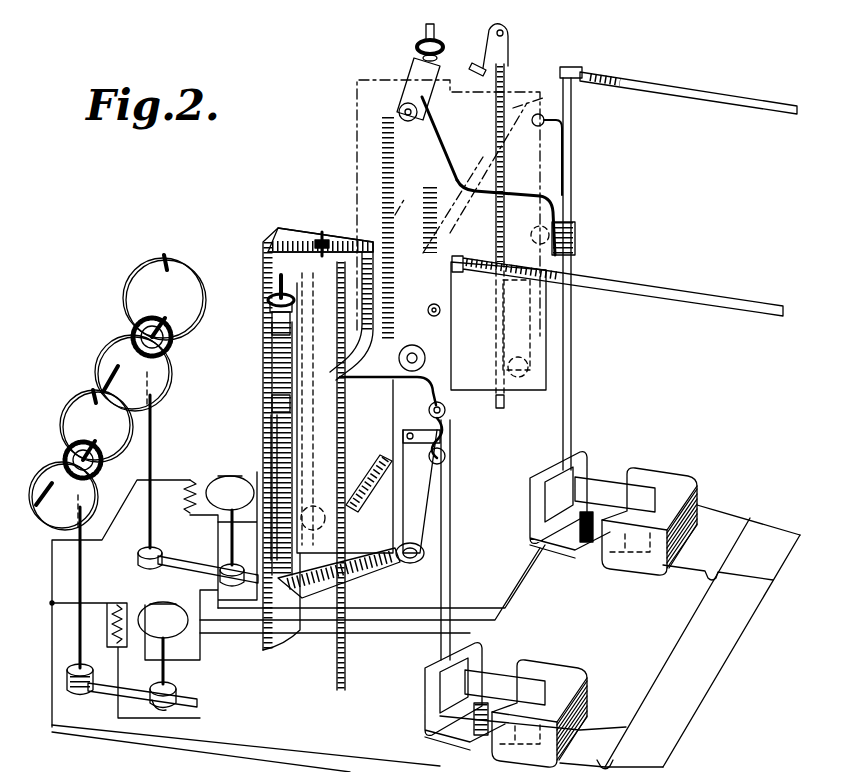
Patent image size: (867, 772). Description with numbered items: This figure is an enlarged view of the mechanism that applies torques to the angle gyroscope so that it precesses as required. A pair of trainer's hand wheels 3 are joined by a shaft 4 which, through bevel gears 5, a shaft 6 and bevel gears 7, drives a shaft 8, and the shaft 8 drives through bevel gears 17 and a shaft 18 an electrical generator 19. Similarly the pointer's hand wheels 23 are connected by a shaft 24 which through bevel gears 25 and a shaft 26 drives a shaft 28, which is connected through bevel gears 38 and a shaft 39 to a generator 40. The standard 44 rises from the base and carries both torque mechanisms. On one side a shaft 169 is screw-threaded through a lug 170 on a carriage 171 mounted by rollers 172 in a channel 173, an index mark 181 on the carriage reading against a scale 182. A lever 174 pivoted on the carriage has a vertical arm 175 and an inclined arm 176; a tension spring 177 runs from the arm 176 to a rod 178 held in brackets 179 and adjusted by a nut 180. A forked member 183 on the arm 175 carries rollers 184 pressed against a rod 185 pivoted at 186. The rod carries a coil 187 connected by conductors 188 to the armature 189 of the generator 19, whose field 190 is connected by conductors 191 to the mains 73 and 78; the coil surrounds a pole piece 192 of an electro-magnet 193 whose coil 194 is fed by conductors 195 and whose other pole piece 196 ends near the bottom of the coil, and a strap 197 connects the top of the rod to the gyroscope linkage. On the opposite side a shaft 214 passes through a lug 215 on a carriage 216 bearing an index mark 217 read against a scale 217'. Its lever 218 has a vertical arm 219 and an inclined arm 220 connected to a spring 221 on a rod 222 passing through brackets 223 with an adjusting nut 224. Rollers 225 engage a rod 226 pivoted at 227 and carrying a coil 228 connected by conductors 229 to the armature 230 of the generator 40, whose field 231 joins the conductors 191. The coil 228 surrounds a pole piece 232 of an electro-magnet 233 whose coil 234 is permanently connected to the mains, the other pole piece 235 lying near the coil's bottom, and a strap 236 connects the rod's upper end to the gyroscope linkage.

The trainer's hand wheels 3 is at (80, 412).
The shaft 4 is at (68, 453).
The bevel gears 5 is at (96, 462).
The shaft 6 is at (84, 568).
The bevel gears 7 is at (74, 694).
The shaft 8 is at (198, 702).
The bevel gears 17 is at (170, 706).
The shaft 18 is at (158, 682).
The electrical generator 19 is at (162, 603).
The hand wheels 23 is at (152, 280).
The shaft 24 is at (132, 333).
The bevel gears 25 is at (168, 340).
The shaft 26 is at (155, 415).
The shaft 28 is at (192, 562).
The bevel gears 38 is at (235, 584).
The shaft 39 is at (236, 536).
The generator 40 is at (231, 471).
The standard 44 is at (262, 238).
The main 73 is at (684, 633).
The main 78 is at (745, 632).
The shaft 169 is at (334, 386).
The lug 170 is at (352, 455).
The carriage 171 is at (440, 487).
The rollers 172 is at (290, 240).
The channel 173 is at (322, 232).
The lever 174 is at (425, 547).
The vertical arm 175 is at (452, 506).
The inclined arm 176 is at (380, 575).
The tension spring 177 is at (291, 488).
The rod 178 is at (275, 283).
The brackets 179 is at (272, 325).
The nut 180 is at (268, 300).
The index mark 181 is at (319, 409).
The scale 182 is at (270, 440).
The forked member 183 is at (428, 412).
The rollers 184 is at (432, 402).
The rod 185 is at (447, 433).
The pivot 186 is at (453, 305).
The coil 187 is at (483, 655).
The conductors 188 is at (412, 622).
The armature 189 is at (163, 620).
The field 190 is at (120, 602).
The conductors 191 is at (285, 765).
The pole piece 192 is at (497, 675).
The electro-magnet 193 is at (575, 667).
The coil 194 is at (590, 708).
The conductors 195 is at (603, 758).
The pole piece 196 is at (472, 720).
The strap 197 is at (703, 312).
The shaft 214 is at (508, 82).
The lug 215 is at (538, 228).
The carriage 216 is at (505, 197).
The index mark 217 is at (346, 228).
The scale 217' is at (421, 210).
The lever 218 is at (540, 340).
The vertical arm 219 is at (548, 311).
The inclined arm 220 is at (496, 399).
The spring 221 is at (437, 207).
The rod 222 is at (452, 170).
The brackets 223 is at (400, 75).
The adjusting nut 224 is at (440, 44).
The rollers 225 is at (576, 236).
The rod 226 is at (573, 172).
The pivot 227 is at (537, 128).
The coil 228 is at (588, 452).
The conductors 229 is at (528, 592).
The armature 230 is at (230, 493).
The field 231 is at (192, 480).
The pole piece 232 is at (618, 475).
The electro-magnet 233 is at (694, 477).
The coil 234 is at (700, 512).
The pole piece 235 is at (582, 545).
The strap 236 is at (718, 103).